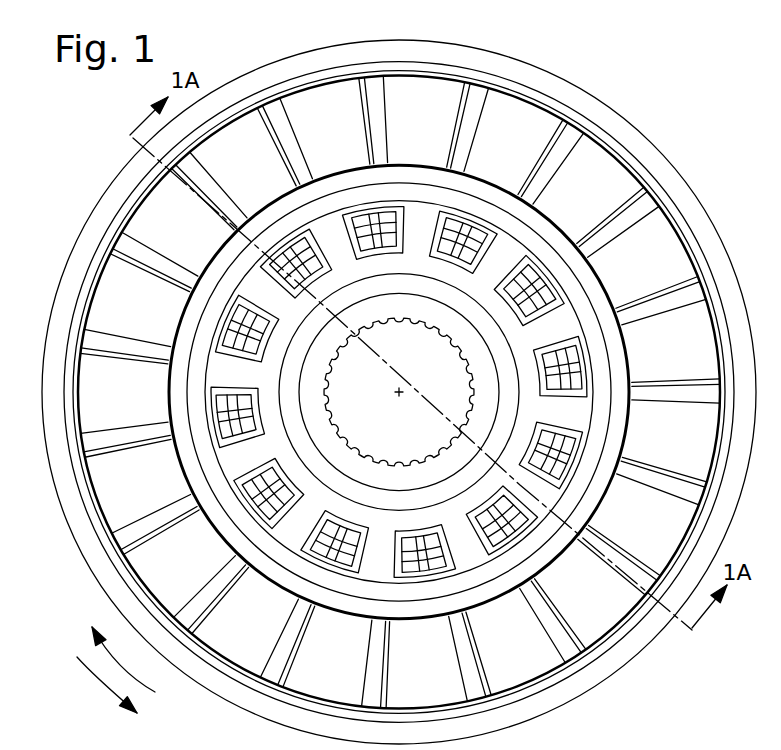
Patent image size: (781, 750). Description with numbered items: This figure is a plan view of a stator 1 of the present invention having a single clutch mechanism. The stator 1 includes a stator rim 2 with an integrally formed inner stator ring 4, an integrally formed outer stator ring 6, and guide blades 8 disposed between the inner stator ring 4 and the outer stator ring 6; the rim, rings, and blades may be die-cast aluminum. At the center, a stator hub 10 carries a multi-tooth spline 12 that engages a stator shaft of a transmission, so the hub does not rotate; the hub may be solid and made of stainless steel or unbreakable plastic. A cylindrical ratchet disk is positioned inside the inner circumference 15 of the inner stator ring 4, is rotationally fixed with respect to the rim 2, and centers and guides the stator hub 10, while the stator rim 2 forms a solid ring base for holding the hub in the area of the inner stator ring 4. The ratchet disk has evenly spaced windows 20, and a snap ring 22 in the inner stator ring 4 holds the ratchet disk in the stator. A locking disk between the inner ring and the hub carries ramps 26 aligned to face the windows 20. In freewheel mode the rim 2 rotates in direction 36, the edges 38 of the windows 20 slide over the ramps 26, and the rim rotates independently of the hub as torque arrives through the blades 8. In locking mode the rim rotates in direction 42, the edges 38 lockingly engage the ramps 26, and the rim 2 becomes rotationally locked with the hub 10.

The stator 1 is at (677, 132).
The stator rim 2 is at (615, 107).
The inner stator ring 4 is at (224, 258).
The outer stator ring 6 is at (261, 77).
The guide blades 8 is at (460, 76).
The stator hub 10 is at (476, 352).
The multi-tooth spline 12 is at (478, 388).
The inner circumference 15 is at (487, 183).
The window 20 is at (235, 482).
The snap ring 22 is at (197, 347).
The ramps 26 is at (323, 538).
The direction 36 is at (100, 685).
The edges 38 is at (232, 440).
The direction 42 is at (120, 665).